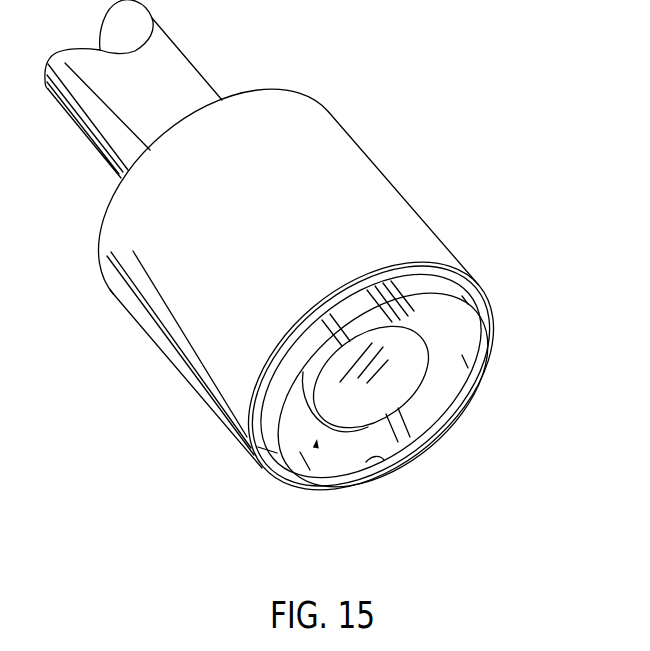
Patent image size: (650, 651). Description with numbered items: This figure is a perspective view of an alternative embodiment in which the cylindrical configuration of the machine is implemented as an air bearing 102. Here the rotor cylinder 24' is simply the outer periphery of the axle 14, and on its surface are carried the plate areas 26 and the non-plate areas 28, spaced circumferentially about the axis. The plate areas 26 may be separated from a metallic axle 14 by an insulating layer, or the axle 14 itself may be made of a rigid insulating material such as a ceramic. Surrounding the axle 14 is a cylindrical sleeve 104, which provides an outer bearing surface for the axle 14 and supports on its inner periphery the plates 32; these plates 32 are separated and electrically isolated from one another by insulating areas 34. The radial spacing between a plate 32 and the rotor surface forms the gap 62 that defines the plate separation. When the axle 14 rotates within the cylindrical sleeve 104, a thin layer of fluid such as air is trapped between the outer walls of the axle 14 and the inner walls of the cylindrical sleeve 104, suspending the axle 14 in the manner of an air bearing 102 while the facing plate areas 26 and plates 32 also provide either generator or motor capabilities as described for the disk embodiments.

The axle 14 is at (204, 78).
The rotor cylinder 24' is at (371, 428).
The plate areas 26 is at (305, 362).
The non-plate areas 28 is at (375, 327).
The plates 32 is at (487, 368).
The insulating areas 34 is at (368, 460).
The gap 62 is at (316, 447).
The air bearing 102 is at (440, 158).
The cylindrical sleeve 104 is at (158, 304).